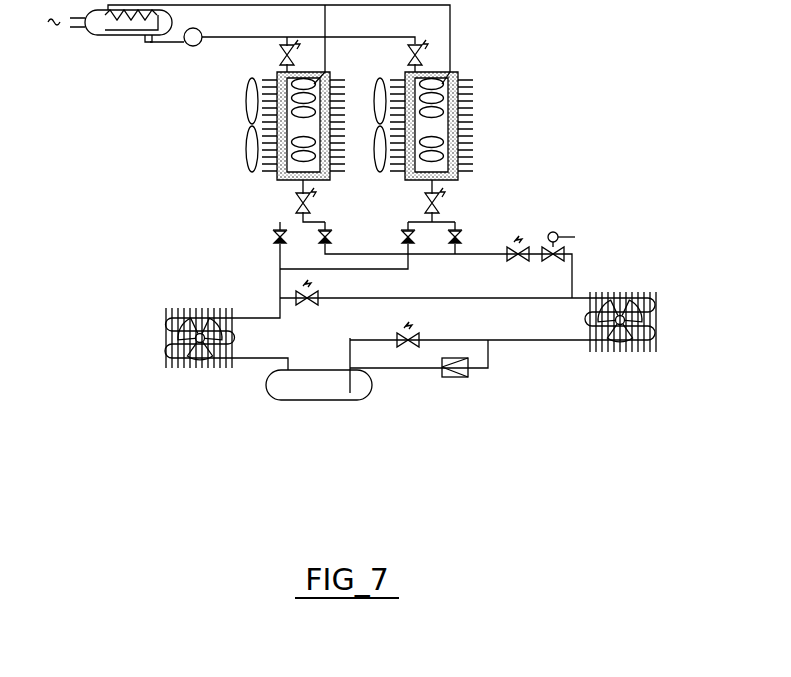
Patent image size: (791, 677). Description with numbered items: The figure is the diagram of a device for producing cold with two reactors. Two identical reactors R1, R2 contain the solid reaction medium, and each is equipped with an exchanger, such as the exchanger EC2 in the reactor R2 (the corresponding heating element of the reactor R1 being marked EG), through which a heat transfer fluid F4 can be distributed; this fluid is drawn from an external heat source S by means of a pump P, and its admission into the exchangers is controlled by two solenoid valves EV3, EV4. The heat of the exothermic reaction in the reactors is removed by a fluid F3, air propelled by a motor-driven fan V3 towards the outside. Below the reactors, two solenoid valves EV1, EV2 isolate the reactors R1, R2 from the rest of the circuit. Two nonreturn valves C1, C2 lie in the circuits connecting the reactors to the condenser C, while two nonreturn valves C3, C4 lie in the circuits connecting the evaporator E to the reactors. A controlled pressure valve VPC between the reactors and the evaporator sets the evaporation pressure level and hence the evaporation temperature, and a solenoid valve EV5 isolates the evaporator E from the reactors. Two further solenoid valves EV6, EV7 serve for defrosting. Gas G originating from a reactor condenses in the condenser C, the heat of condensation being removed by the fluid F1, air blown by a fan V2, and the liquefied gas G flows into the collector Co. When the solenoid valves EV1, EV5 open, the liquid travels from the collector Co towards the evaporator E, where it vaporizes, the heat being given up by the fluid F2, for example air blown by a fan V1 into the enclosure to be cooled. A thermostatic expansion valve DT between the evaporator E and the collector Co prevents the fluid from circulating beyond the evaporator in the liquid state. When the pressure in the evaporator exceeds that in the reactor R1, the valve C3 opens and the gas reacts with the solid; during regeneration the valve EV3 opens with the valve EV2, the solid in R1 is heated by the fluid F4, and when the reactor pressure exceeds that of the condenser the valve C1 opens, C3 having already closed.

The external heat source S is at (69, 40).
The pump P is at (190, 46).
The heat transfer fluid F4 is at (165, 26).
The solenoid valve EV3 is at (270, 52).
The solenoid valve EV4 is at (400, 52).
The electric heating element of reactor R1 EG is at (330, 72).
The exchanger EC2 is at (460, 72).
The fluid F3 is at (345, 125).
The reactor R1 is at (303, 126).
The reactor R2 is at (431, 126).
The motor-driven fan V3 is at (247, 150).
The solenoid valve EV1 is at (328, 201).
The solenoid valve EV2 is at (457, 201).
The nonreturn valve C1 is at (267, 238).
The nonreturn valve C2 is at (395, 238).
The nonreturn valve C3 is at (337, 238).
The nonreturn valve C4 is at (466, 238).
The controlled pressure valve VPC is at (578, 245).
The solenoid valve EV5 is at (516, 261).
The solenoid valve EV6 is at (306, 305).
The solenoid valve EV7 is at (404, 345).
The fluid F1 is at (200, 326).
The fan V2 is at (200, 368).
The condenser C is at (134, 351).
The fluid F2 is at (620, 309).
The fan V1 is at (590, 330).
The evaporator E is at (627, 319).
The liquefied gas G is at (298, 396).
The collector Co is at (319, 405).
The thermostatic expansion valve DT is at (455, 380).